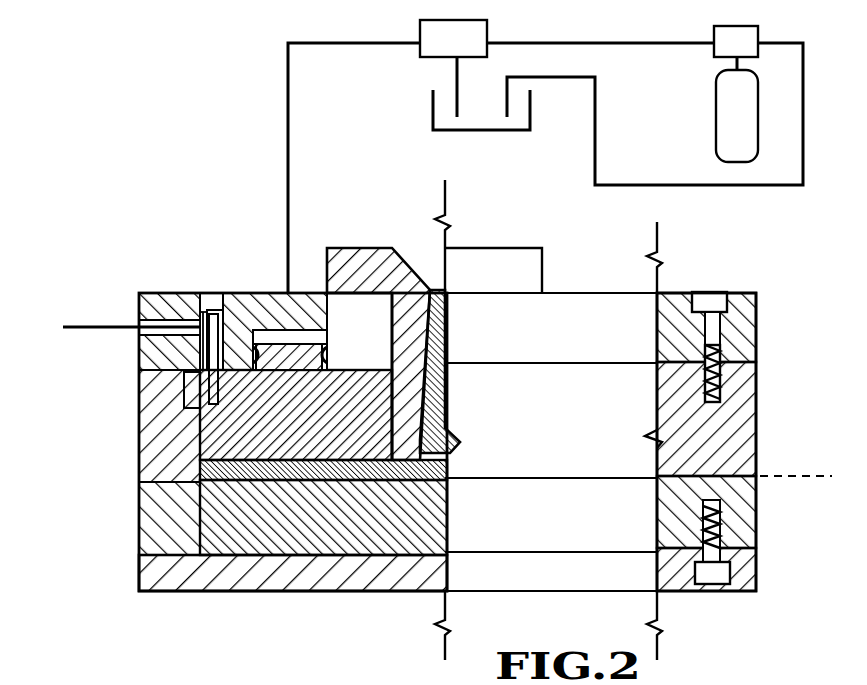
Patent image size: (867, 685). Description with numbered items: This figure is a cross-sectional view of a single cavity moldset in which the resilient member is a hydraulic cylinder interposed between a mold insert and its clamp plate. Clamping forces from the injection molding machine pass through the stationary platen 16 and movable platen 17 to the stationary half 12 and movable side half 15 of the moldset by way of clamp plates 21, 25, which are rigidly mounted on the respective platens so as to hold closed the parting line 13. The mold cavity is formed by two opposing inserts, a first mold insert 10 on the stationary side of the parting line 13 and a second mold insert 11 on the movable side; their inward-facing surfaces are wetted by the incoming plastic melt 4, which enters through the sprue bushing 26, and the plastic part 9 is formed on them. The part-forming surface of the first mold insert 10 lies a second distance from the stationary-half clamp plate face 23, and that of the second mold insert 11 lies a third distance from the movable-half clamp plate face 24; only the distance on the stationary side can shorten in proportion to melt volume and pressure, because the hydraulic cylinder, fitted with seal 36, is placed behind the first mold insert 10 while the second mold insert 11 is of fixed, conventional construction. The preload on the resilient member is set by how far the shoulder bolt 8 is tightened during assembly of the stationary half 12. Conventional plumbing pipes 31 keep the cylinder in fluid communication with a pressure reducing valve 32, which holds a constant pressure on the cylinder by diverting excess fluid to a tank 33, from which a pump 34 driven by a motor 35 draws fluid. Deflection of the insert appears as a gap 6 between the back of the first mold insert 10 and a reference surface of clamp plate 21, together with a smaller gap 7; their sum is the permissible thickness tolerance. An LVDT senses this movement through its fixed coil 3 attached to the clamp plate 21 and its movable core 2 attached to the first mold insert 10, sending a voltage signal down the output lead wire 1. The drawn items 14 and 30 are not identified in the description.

The output lead wire 1 is at (185, 325).
The movable core 2 is at (204, 318).
The fixed coil 3 is at (222, 310).
The plastic melt 4 is at (440, 290).
The gap 6 is at (182, 362).
The gap 7 is at (184, 406).
The shoulder bolt 8 is at (712, 338).
The plastic part 9 is at (200, 466).
The first mold insert 10 is at (200, 432).
The second mold insert 11 is at (200, 518).
The stationary half 12 is at (730, 408).
The parting line 13 is at (798, 472).
The lower spring loaded bolt 14 is at (726, 540).
The movable side half 15 is at (732, 500).
The stationary platen 16 is at (738, 252).
The movable platen 17 is at (760, 647).
The clamp plate 21 is at (756, 312).
The stationary-half clamp plate face 23 is at (185, 372).
The movable-half clamp plate face 24 is at (140, 562).
The clamp plate 25 is at (752, 575).
The sprue bushing 26 is at (364, 262).
The shim plate 30 is at (306, 340).
The plumbing pipes 31 is at (288, 97).
The pressure reducing valve 32 is at (432, 50).
The tank 33 is at (490, 130).
The pump 34 is at (718, 48).
The motor 35 is at (727, 138).
The seal 36 is at (254, 340).